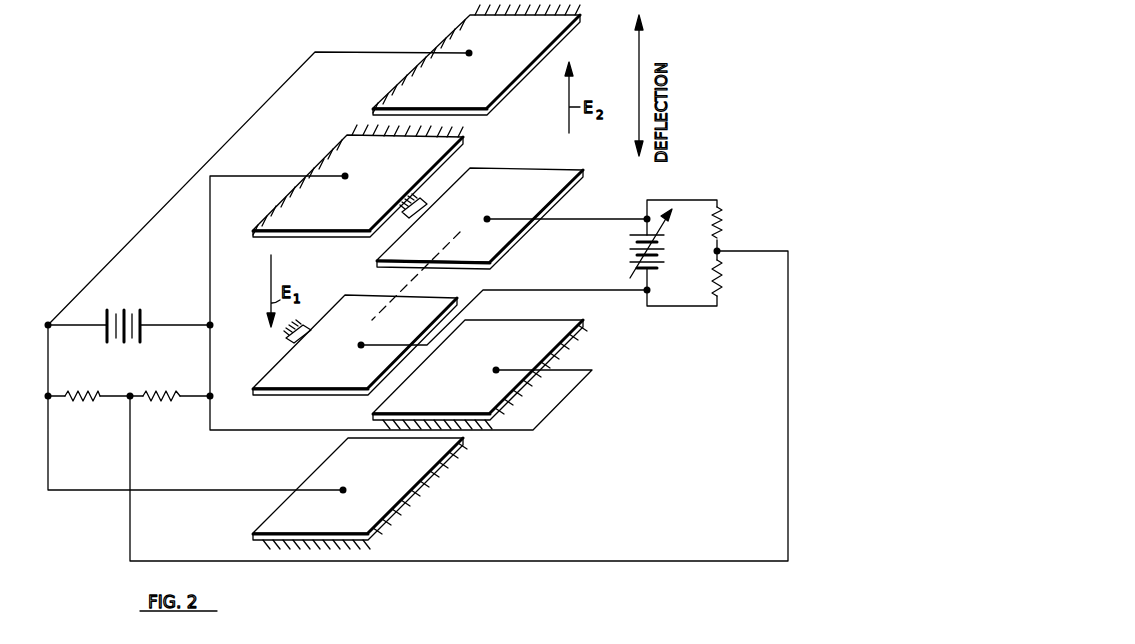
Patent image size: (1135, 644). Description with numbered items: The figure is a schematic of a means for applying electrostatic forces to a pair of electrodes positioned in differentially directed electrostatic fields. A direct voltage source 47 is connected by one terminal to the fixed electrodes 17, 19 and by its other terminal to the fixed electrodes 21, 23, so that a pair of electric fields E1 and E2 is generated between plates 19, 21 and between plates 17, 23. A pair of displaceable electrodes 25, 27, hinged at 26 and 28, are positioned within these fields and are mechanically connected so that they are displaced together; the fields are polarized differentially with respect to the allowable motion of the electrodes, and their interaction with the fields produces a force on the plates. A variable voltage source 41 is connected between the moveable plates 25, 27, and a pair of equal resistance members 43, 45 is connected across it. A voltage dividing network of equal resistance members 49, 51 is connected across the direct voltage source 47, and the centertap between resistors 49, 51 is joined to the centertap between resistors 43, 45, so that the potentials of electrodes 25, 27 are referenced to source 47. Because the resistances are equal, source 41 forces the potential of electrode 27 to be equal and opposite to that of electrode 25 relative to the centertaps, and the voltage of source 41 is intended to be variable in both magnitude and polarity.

The electrode 17 is at (548, 28).
The electrode 19 is at (400, 482).
The electrode 21 is at (342, 163).
The electrode 23 is at (542, 338).
The displaceable electrode 25 is at (307, 367).
The hinge 26 is at (300, 327).
The displaceable electrode 27 is at (558, 182).
The hinge 28 is at (417, 203).
The variable voltage source 41 is at (662, 243).
The resistance member 43 is at (722, 225).
The resistance member 45 is at (719, 270).
The direct voltage source 47 is at (118, 308).
The resistance member 49 is at (80, 392).
The resistance member 51 is at (158, 392).